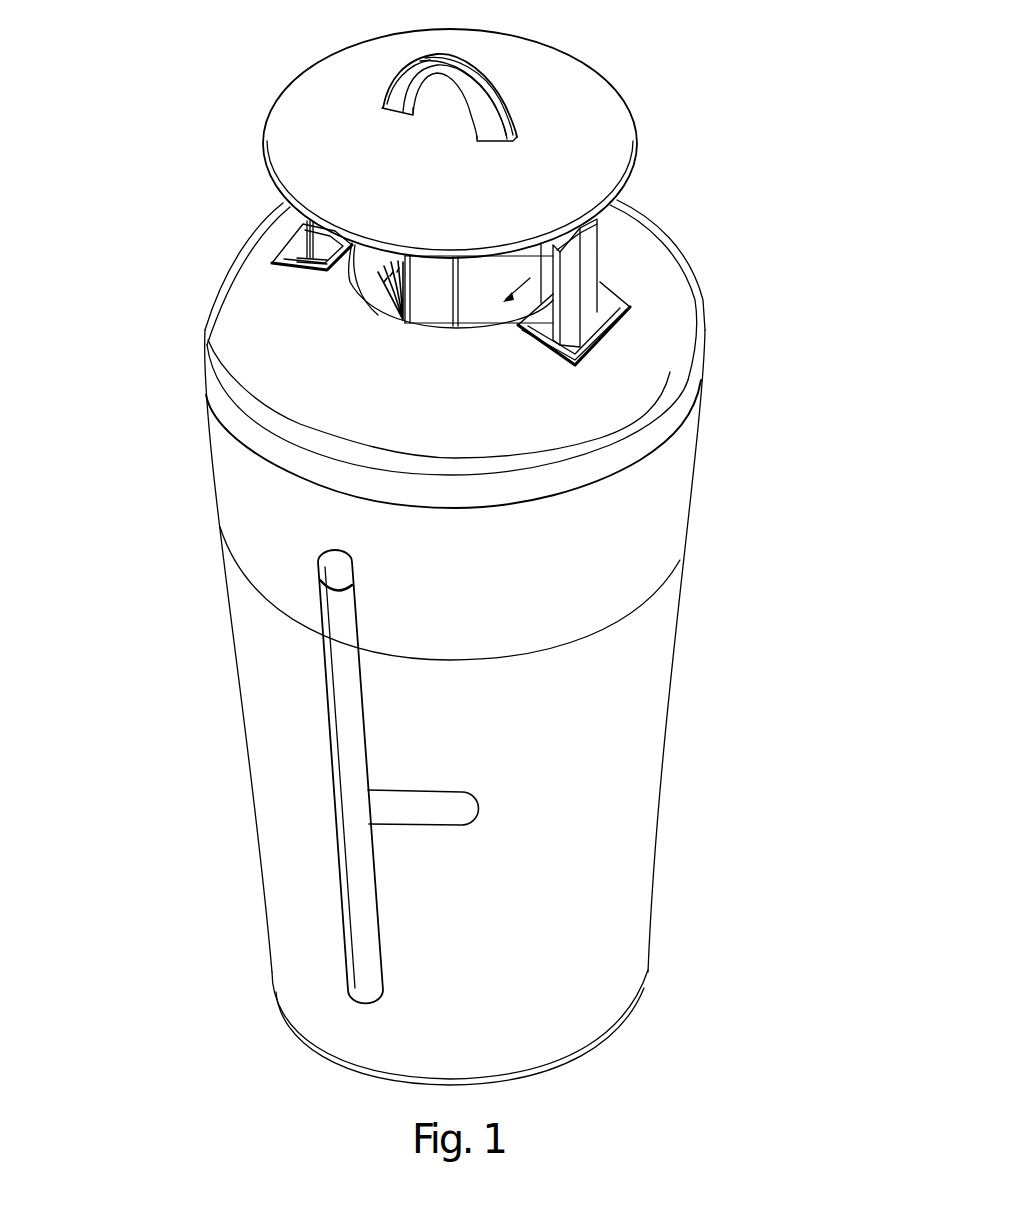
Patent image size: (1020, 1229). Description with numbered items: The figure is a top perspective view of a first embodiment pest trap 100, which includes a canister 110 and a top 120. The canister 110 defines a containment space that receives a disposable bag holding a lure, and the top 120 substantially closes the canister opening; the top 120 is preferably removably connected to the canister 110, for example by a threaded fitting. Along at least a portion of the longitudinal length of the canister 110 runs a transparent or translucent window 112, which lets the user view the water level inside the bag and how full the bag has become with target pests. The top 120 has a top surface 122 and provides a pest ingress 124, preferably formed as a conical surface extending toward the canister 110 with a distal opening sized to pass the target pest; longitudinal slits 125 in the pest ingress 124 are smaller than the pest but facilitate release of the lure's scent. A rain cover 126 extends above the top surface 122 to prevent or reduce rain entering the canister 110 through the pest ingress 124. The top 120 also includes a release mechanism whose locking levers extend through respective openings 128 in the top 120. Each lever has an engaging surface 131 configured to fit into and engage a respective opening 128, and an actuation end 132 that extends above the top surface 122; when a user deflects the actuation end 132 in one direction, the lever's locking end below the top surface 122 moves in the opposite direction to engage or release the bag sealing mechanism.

The pest trap 100 is at (133, 82).
The canister 110 is at (710, 578).
The window 112 is at (345, 681).
The top 120 is at (710, 256).
The top surface 122 is at (335, 375).
The pest ingress 124 is at (361, 289).
The longitudinal slits 125 is at (392, 320).
The rain cover 126 is at (607, 112).
The openings 128 is at (292, 243).
The engaging surface 131 is at (597, 333).
The actuation end 132 is at (594, 262).